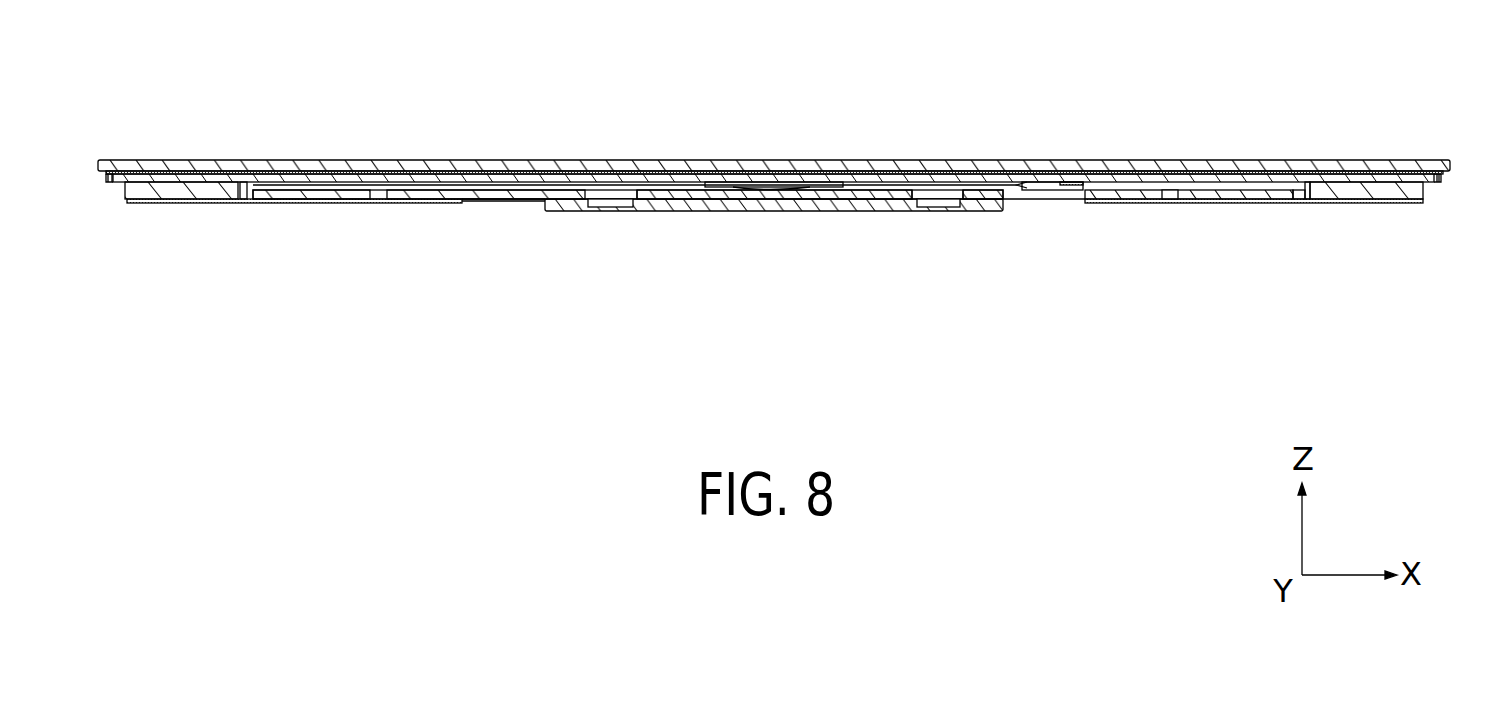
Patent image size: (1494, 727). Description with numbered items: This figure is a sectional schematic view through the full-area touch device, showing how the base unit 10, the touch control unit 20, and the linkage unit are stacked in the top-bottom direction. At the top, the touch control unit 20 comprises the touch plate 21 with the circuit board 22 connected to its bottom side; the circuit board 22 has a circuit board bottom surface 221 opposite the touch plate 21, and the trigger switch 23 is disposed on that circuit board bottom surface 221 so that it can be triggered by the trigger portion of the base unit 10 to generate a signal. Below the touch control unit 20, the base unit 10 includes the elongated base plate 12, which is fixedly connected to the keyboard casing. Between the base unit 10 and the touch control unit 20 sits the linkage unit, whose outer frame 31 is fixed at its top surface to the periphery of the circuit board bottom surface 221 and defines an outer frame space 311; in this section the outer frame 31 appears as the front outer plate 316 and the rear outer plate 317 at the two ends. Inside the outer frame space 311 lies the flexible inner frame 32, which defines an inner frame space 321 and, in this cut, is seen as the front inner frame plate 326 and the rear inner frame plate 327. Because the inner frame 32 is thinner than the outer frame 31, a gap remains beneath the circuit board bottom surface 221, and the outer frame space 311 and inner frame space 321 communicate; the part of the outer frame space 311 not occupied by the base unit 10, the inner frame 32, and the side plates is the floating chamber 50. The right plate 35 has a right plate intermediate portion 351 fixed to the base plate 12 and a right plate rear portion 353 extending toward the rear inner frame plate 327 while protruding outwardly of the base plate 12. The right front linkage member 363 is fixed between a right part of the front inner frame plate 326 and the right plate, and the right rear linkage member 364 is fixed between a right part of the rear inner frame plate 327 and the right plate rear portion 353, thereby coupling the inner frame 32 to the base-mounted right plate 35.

The base unit 10 is at (774, 267).
The base plate 12 is at (658, 212).
The touch control unit 20 is at (783, 154).
The touch plate 21 is at (1237, 165).
The circuit board 22 is at (787, 159).
The circuit board bottom surface 221 is at (1441, 183).
The trigger switch 23 is at (769, 186).
The outer frame 31 is at (1355, 266).
The outer frame space 311 is at (1300, 196).
The front outer plate 316 is at (1352, 192).
The rear outer plate 317 is at (177, 190).
The inner frame 32 is at (1189, 261).
The inner frame space 321 is at (1160, 245).
The front inner frame plate 326 is at (1283, 195).
The rear inner frame plate 327 is at (327, 195).
The right plate 35 is at (1048, 202).
The right plate intermediate portion 351 is at (795, 194).
The right plate rear portion 353 is at (423, 193).
The right front linkage member 363 is at (1107, 203).
The right rear linkage member 364 is at (362, 201).
The floating chamber 50 is at (881, 185).